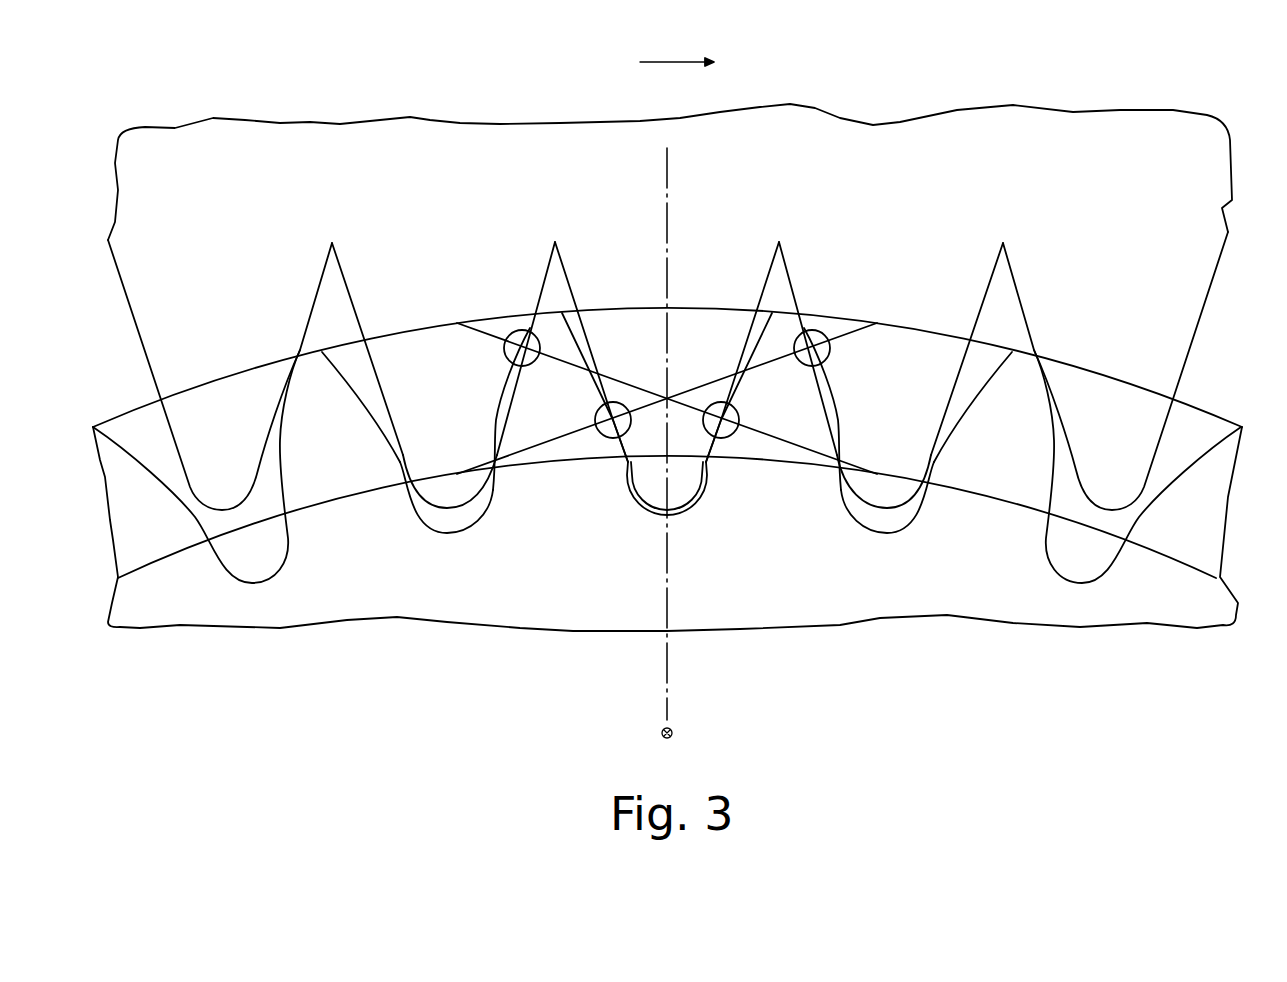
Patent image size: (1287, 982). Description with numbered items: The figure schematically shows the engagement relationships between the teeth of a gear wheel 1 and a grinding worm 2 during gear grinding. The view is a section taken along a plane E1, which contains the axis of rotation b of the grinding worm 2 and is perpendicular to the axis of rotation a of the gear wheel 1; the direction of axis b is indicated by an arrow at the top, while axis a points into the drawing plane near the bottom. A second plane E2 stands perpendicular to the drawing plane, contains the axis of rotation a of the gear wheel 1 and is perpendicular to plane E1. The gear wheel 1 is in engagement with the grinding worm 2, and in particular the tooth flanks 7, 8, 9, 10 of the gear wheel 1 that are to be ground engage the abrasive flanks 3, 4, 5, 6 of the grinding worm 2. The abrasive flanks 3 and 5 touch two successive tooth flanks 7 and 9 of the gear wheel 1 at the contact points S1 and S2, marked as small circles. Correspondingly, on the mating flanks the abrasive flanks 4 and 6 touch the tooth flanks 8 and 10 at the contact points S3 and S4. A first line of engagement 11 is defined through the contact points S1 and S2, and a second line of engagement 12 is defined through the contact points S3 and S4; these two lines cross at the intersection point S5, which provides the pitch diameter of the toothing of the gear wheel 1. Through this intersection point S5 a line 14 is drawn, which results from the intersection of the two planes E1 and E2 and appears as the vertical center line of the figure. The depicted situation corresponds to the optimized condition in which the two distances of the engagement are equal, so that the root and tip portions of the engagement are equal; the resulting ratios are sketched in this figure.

The gear wheel 1 is at (992, 598).
The grinding worm 2 is at (985, 150).
The abrasive flank 3 is at (543, 300).
The abrasive flank 4 is at (566, 300).
The abrasive flank 5 is at (767, 300).
The abrasive flank 6 is at (791, 300).
The tooth flank 7 is at (488, 428).
The tooth flank 8 is at (622, 458).
The tooth flank 9 is at (712, 458).
The tooth flank 10 is at (845, 428).
The first line of engagement 11 is at (570, 365).
The second line of engagement 12 is at (765, 365).
The line 14 is at (670, 652).
The contact point S1 is at (520, 340).
The contact point S2 is at (725, 432).
The contact point S3 is at (615, 412).
The contact point S4 is at (826, 356).
The intersection point S5 is at (668, 398).
The plane E1 is at (352, 56).
The second plane E2 is at (664, 690).
The axis of rotation a is at (678, 733).
The axis of rotation b is at (686, 63).